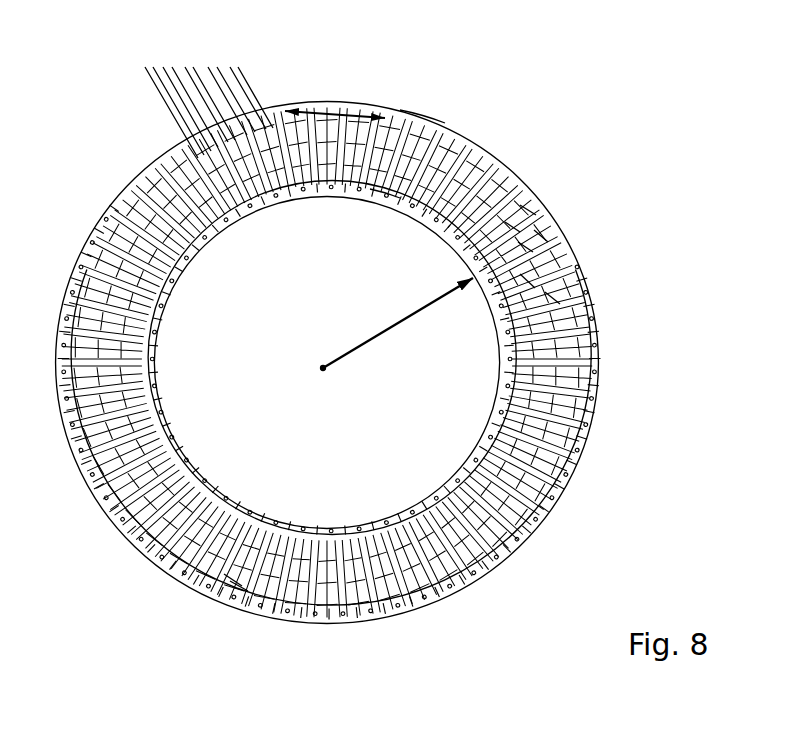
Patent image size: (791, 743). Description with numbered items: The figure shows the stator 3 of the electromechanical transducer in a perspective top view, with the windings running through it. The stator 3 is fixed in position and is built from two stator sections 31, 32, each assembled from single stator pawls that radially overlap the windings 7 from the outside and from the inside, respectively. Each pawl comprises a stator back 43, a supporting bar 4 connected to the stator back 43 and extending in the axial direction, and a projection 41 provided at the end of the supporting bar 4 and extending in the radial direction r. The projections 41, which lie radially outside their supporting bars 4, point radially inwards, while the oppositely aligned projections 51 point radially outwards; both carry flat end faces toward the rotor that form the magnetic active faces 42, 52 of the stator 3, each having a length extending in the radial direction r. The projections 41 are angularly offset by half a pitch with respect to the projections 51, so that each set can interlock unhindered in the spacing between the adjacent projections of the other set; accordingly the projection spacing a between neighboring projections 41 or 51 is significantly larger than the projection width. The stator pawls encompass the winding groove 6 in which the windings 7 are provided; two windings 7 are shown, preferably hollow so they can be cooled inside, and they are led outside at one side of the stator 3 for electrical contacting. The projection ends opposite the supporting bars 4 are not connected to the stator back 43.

The stator 3 is at (522, 127).
The stator section 31 is at (432, 122).
The stator section 32 is at (383, 183).
The supporting bar 4 is at (231, 579).
The projection 41 is at (540, 235).
The magnetic active face 42 is at (525, 245).
The stator back 43 is at (238, 585).
The projection 51 is at (513, 225).
The magnetic active face 52 is at (530, 212).
The winding groove 6 is at (528, 280).
The winding 7 is at (553, 297).
The projection spacing a is at (337, 113).
The radial direction r is at (397, 328).